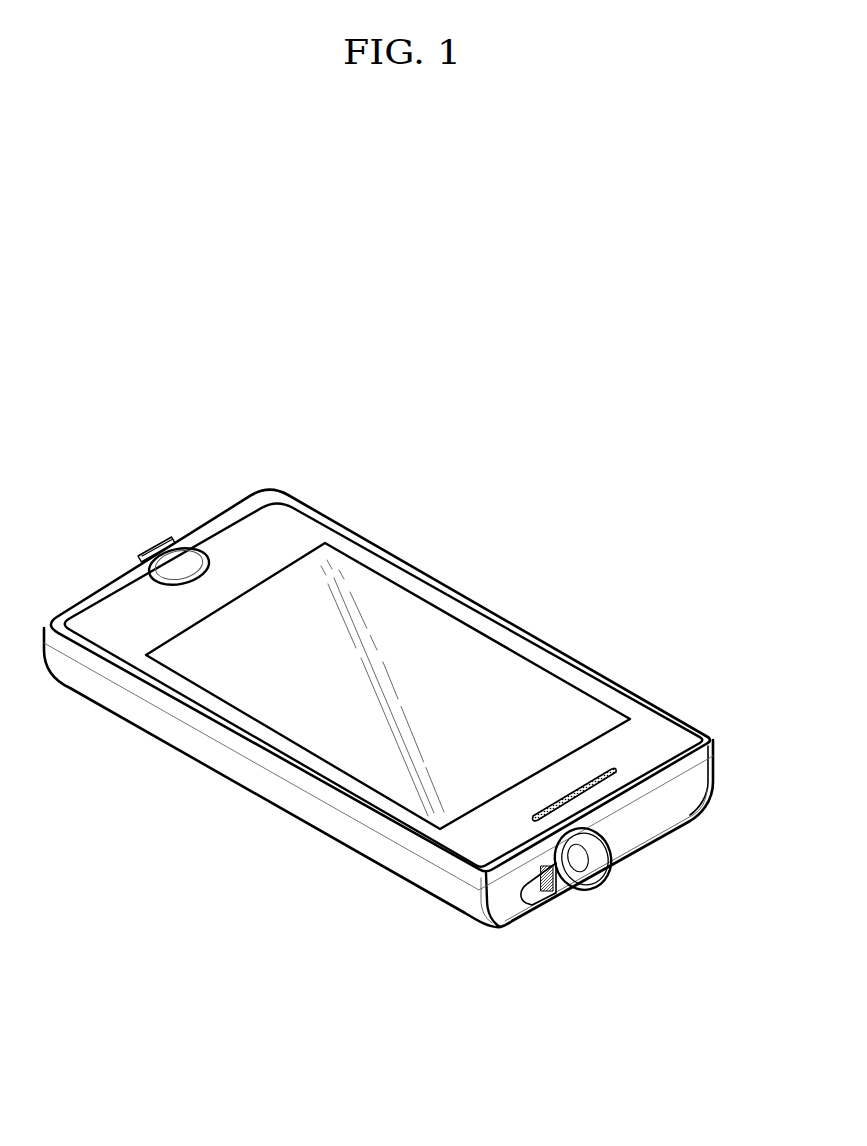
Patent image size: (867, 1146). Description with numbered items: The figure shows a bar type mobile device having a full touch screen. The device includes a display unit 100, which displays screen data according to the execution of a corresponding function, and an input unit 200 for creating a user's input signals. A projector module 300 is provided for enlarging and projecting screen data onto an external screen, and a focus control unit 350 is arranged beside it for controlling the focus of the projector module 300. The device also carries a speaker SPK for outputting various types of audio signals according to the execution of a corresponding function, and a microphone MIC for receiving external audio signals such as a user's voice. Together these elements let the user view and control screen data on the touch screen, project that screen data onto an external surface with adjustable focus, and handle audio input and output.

The display unit 100 is at (465, 658).
The input unit 200 is at (240, 534).
The microphone MIC is at (155, 543).
The speaker SPK is at (613, 770).
The projector module 300 is at (577, 861).
The focus control unit 350 is at (523, 898).